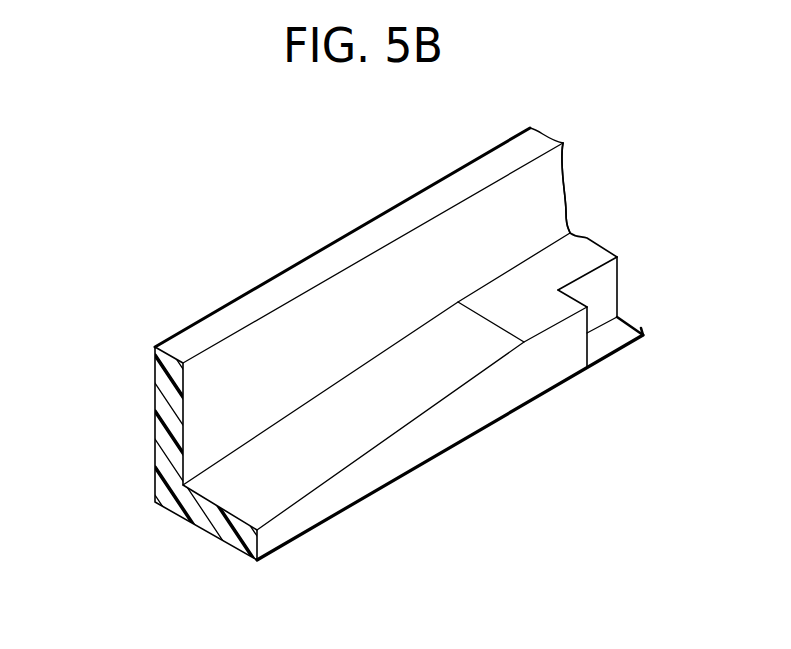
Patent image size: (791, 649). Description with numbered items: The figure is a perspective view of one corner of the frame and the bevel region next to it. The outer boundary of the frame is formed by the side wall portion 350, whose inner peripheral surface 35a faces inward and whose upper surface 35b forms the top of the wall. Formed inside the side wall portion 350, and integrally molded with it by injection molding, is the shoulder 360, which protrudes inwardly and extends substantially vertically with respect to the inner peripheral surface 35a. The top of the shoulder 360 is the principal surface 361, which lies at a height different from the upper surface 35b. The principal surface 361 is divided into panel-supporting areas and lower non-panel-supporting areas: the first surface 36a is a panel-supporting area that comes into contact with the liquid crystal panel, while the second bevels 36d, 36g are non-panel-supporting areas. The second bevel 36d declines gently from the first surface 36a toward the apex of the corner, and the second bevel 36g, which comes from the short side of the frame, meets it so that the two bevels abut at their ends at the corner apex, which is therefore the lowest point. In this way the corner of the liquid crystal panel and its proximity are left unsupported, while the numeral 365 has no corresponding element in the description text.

The side wall portion 350 is at (142, 384).
The shoulder 360 is at (195, 538).
The inner peripheral surface 35a is at (347, 313).
The upper surface 35b is at (244, 310).
The principal surface 361 is at (578, 230).
The first surface 36a is at (655, 287).
The projection 365 is at (590, 262).
The second bevel 36d is at (385, 381).
The second bevel 36g is at (350, 427).